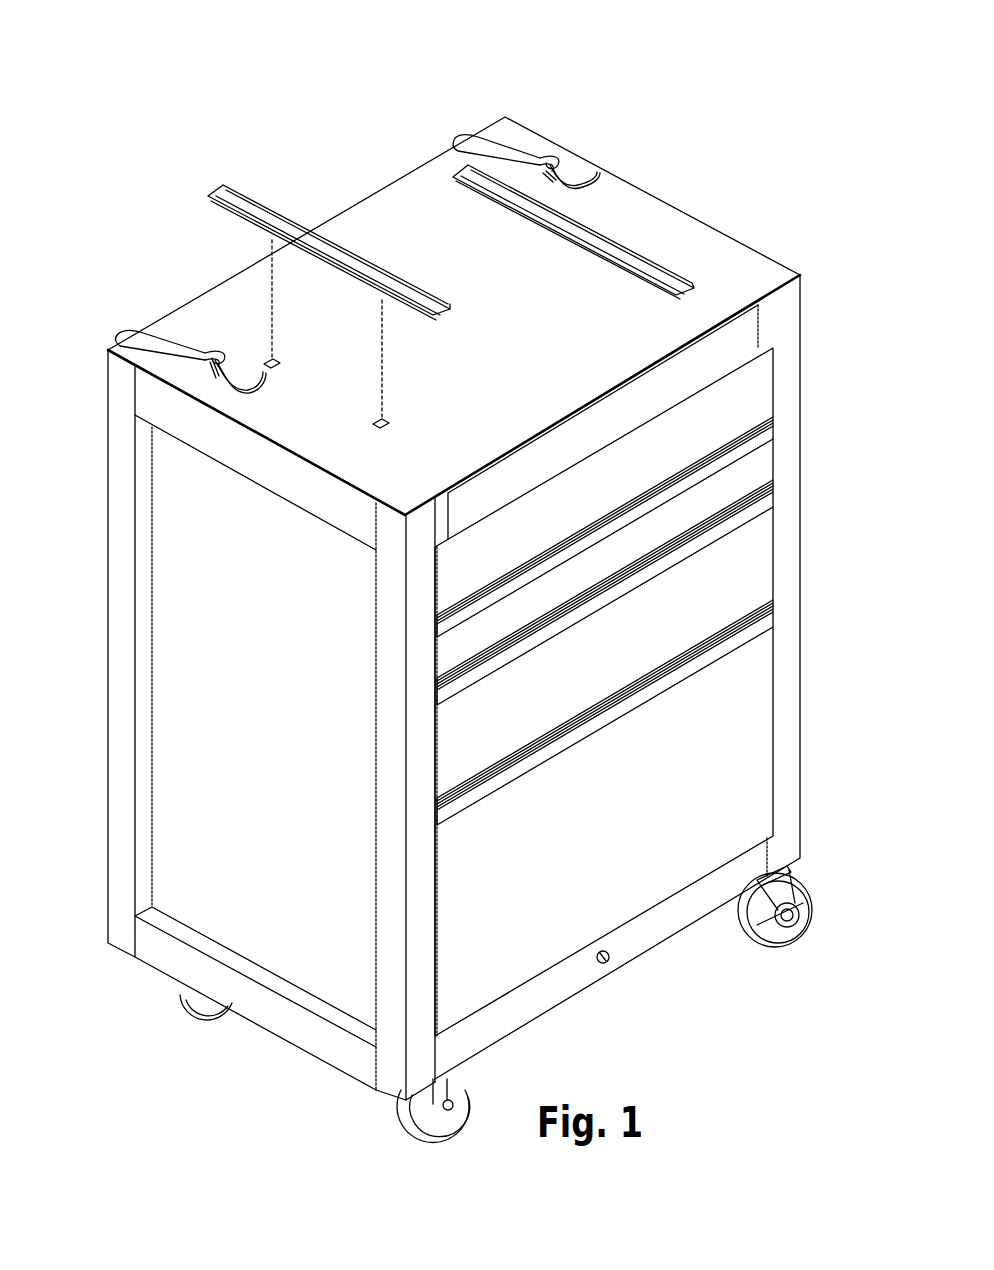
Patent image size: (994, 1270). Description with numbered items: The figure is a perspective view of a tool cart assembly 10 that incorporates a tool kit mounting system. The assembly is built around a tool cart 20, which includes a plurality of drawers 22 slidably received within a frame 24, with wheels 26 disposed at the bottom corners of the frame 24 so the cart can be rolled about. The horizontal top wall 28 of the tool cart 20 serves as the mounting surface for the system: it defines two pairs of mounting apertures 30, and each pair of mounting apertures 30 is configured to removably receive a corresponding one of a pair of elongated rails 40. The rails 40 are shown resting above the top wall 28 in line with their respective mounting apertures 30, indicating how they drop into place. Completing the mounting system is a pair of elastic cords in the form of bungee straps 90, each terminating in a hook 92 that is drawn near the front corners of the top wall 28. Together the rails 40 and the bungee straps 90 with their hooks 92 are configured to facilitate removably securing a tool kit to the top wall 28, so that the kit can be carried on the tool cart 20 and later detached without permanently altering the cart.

The tool cart assembly 10 is at (728, 100).
The tool cart 20 is at (103, 765).
The drawers 22 is at (740, 731).
The frame 24 is at (280, 1016).
The wheels 26 is at (803, 888).
The top wall 28 is at (703, 248).
The mounting apertures 30 is at (263, 350).
The elongated rails 40 is at (278, 198).
The bungee straps 90 is at (170, 340).
The hook 92 is at (253, 388).